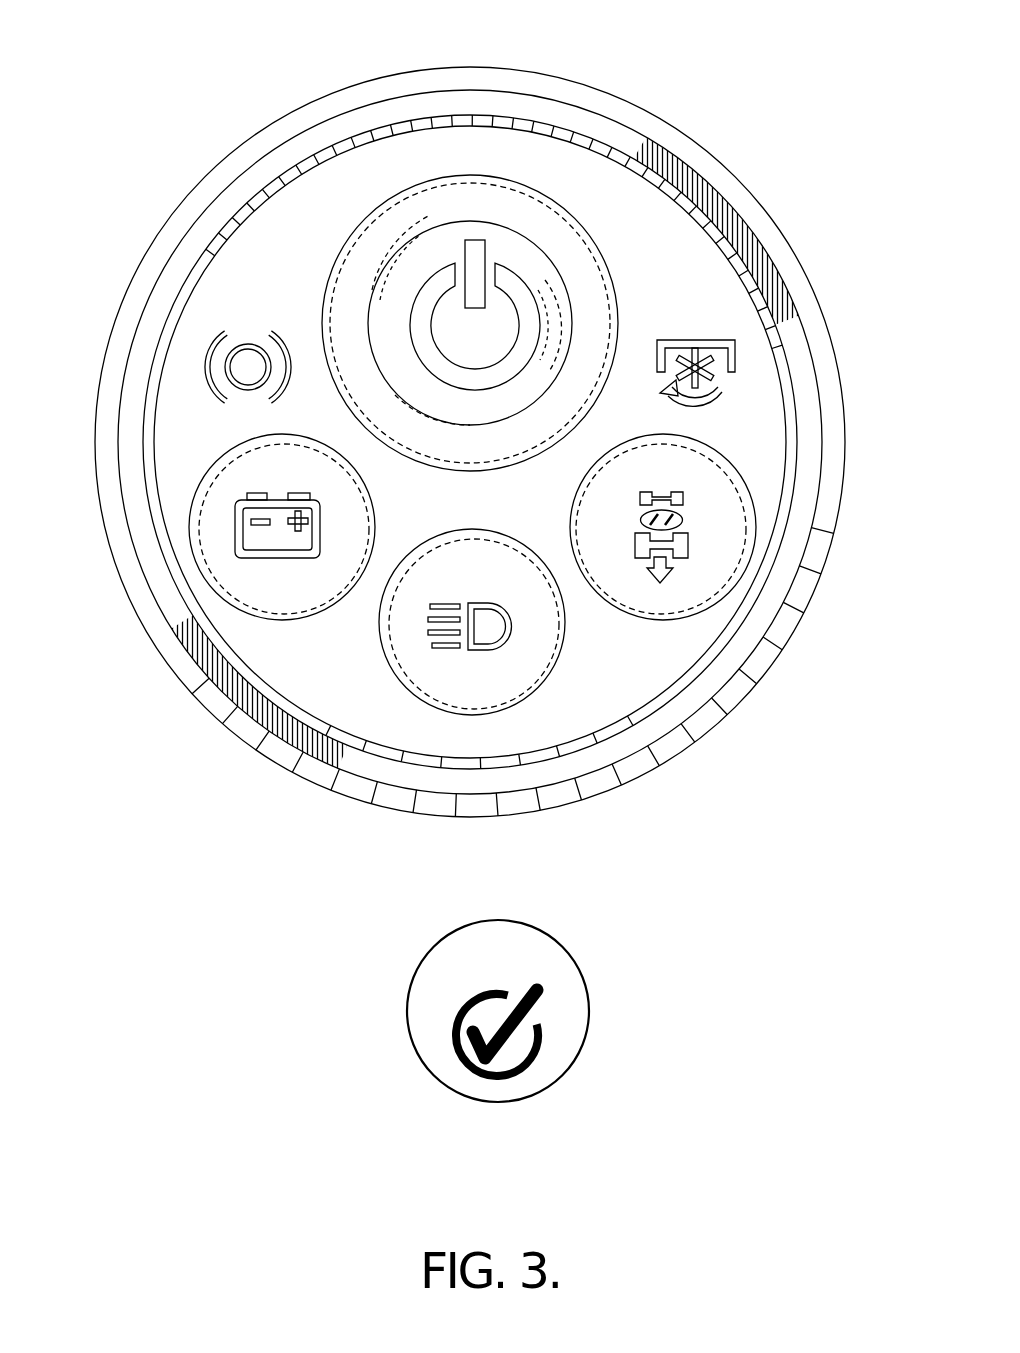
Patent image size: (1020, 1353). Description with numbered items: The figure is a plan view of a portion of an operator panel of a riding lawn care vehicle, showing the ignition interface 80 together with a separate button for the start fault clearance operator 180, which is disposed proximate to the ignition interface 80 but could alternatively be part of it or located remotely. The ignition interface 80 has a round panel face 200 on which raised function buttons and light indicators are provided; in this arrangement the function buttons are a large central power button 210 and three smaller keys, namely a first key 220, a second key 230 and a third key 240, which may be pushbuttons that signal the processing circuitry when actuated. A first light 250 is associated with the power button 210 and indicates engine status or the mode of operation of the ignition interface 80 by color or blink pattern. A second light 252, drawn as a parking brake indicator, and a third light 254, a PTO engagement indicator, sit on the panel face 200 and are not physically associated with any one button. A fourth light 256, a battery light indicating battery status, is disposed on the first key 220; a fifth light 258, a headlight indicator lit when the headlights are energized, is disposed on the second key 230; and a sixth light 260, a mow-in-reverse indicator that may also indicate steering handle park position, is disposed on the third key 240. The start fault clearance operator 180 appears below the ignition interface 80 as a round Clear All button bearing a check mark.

The ignition interface 80 is at (118, 62).
The start fault clearance operator 180 is at (402, 1035).
The panel face 200 is at (323, 703).
The power button 210 is at (368, 208).
The first key 220 is at (203, 520).
The second key 230 is at (517, 670).
The third key 240 is at (710, 590).
The first light 250 is at (472, 272).
The second light 252 is at (240, 355).
The third light 254 is at (695, 367).
The fourth light 256 is at (262, 537).
The fifth light 258 is at (468, 640).
The sixth light 260 is at (670, 523).